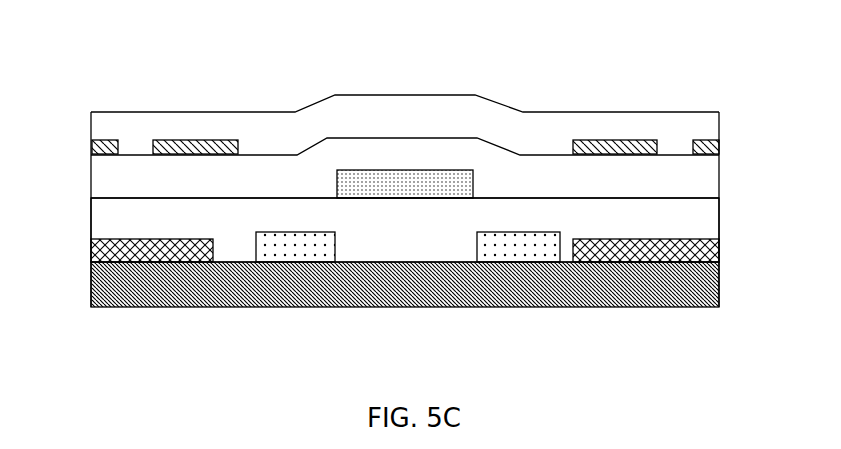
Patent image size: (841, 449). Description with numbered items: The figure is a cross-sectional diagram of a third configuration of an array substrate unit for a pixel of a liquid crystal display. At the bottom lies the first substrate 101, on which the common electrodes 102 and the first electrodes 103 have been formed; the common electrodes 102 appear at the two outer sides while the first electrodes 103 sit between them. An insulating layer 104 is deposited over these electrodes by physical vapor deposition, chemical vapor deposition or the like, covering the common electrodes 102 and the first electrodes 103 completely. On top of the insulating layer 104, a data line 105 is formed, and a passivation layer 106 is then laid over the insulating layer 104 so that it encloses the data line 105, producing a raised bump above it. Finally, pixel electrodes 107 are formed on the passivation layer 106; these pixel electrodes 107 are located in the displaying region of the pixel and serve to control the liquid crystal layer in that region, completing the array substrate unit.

The first substrate 101 is at (703, 292).
The common electrodes 102 is at (97, 250).
The first electrodes 103 is at (308, 243).
The insulating layer 104 is at (703, 207).
The data lines 105 is at (398, 177).
The passivation layer 106 is at (100, 176).
The pixel electrodes 107 is at (100, 146).